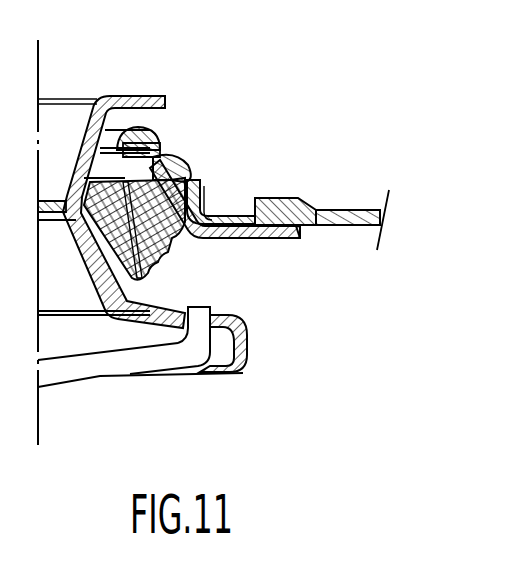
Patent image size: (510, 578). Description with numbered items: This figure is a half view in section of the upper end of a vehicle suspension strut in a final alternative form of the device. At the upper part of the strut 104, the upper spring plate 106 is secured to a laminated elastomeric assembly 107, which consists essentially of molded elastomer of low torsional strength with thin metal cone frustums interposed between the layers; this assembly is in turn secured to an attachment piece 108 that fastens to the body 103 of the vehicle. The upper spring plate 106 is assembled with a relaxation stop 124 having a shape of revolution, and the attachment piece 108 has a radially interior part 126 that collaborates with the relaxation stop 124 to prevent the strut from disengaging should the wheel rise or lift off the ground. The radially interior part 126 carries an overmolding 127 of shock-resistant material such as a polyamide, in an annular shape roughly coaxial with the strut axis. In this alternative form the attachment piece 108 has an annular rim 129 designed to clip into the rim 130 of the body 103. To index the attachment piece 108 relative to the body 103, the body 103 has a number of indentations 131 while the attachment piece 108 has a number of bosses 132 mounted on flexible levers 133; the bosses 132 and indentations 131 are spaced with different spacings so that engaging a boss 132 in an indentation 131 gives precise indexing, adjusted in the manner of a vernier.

The body of the vehicle 103 is at (357, 210).
The strut 104 is at (87, 369).
The upper spring plate 106 is at (248, 344).
The laminated elastomeric assembly 107 is at (160, 263).
The attachment piece 108 is at (249, 239).
The relaxation stop 124 is at (130, 94).
The radially interior part 126 is at (160, 141).
The overmolding 127 is at (140, 130).
The annular rim 129 is at (196, 180).
The rim of the body 130 is at (207, 186).
The indentations 131 is at (290, 203).
The bosses 132 is at (296, 226).
The flexible levers 133 is at (212, 240).